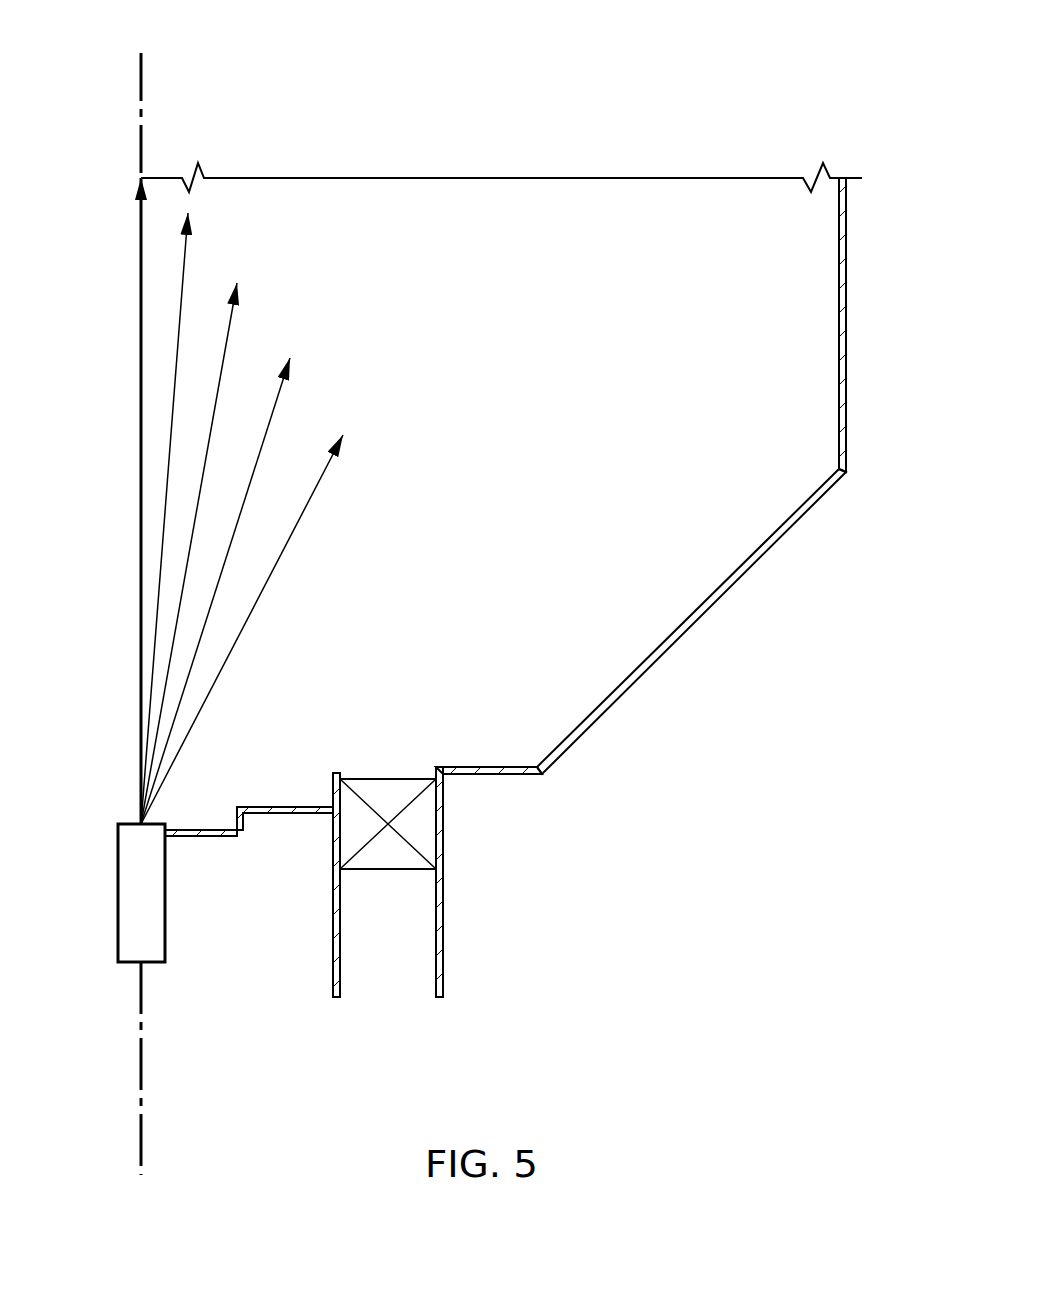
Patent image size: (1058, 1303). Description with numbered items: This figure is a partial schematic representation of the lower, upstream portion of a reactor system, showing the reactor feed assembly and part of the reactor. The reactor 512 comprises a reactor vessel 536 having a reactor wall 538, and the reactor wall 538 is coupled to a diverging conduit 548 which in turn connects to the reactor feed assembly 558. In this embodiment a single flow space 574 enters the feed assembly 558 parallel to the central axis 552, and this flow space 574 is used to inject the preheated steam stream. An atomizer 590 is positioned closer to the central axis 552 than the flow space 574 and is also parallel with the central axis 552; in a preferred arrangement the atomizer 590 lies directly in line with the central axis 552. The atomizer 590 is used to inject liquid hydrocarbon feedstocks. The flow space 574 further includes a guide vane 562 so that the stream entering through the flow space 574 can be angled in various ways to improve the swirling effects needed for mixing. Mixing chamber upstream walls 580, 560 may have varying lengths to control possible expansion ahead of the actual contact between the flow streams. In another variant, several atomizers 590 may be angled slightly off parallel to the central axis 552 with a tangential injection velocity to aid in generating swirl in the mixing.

The reactor 512 is at (338, 88).
The central axis 552 is at (141, 150).
The reactor vessel 536 is at (884, 271).
The reactor wall 538 is at (848, 320).
The diverging conduit 548 is at (705, 640).
The mixing chamber upstream wall 560 is at (483, 766).
The reactor feed assembly 558 is at (491, 836).
The guide vane 562 is at (385, 788).
The flow space 574 is at (410, 944).
The mixing chamber upstream wall 580 is at (268, 841).
The atomizer 590 is at (118, 888).